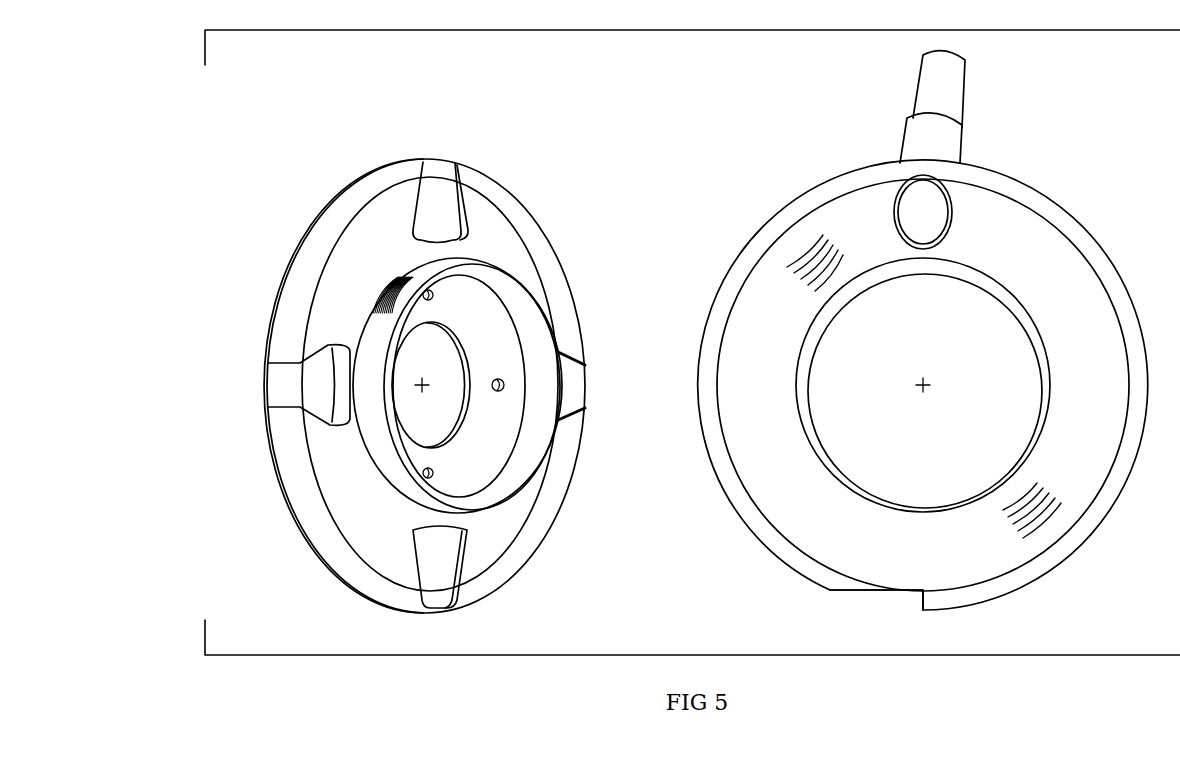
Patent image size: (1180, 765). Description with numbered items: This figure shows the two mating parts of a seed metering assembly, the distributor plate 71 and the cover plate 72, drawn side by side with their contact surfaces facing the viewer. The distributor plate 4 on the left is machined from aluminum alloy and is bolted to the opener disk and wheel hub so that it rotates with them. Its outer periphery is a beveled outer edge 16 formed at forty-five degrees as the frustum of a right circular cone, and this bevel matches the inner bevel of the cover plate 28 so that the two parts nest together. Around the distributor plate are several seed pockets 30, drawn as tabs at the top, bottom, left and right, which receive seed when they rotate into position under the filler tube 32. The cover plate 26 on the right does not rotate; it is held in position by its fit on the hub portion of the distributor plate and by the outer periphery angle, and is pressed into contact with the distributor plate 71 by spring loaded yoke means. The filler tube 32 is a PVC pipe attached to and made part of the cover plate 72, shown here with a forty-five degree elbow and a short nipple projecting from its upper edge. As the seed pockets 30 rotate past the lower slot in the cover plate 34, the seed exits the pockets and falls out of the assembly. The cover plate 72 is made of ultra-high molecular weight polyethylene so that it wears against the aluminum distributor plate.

The distributor plate 4 is at (355, 258).
The beveled outer edge 16 is at (325, 550).
The cover plate 26 is at (770, 307).
The inner bevel of the cover plate 28 is at (735, 490).
The seed pockets 30 is at (440, 167).
The filler tube 32 is at (960, 145).
The lower slot in cover plate 34 is at (907, 600).
The distributor plate 71 is at (495, 217).
The cover plate 72 is at (1072, 212).